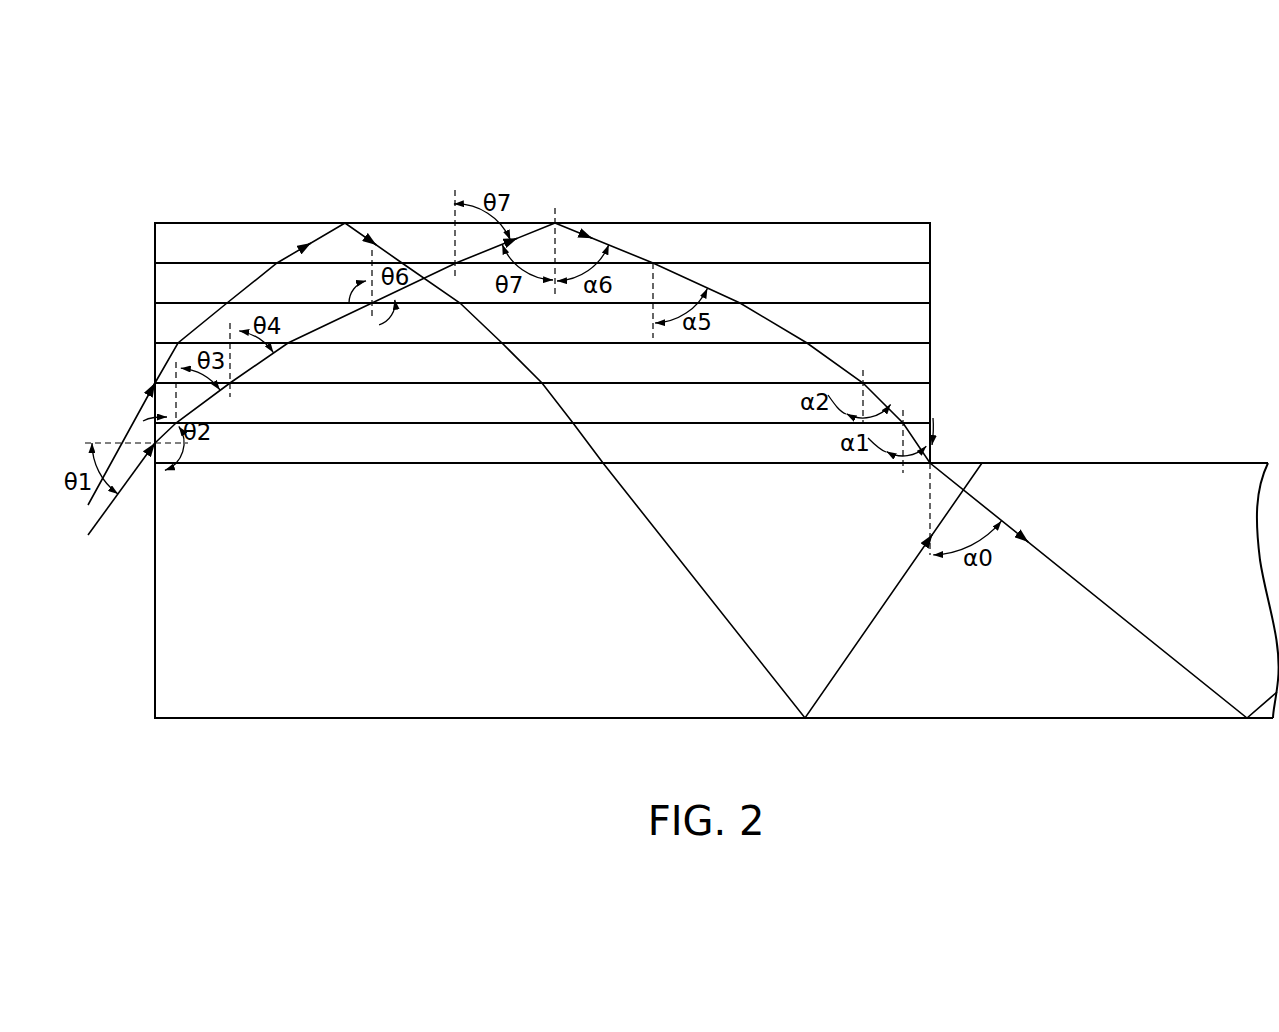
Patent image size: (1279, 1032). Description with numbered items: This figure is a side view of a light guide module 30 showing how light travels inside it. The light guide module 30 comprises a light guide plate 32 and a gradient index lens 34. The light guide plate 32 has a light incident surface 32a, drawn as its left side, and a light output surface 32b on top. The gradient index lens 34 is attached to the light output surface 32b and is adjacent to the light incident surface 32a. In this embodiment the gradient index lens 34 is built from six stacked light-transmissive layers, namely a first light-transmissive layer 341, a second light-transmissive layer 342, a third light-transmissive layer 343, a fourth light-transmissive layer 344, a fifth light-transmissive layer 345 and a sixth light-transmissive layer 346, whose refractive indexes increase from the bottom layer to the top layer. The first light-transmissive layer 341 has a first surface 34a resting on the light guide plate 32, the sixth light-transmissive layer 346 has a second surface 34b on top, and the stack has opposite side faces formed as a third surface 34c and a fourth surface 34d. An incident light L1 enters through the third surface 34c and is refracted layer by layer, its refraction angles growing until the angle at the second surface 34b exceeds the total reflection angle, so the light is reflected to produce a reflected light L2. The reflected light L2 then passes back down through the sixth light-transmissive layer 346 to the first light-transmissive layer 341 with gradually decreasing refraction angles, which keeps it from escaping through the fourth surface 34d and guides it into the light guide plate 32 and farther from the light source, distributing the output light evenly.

The light guide module 30 is at (150, 175).
The light guide plate 32 is at (669, 591).
The light incident surface 32a is at (152, 631).
The light output surface 32b is at (1049, 460).
The gradient index lens 34 is at (534, 334).
The first surface 34a is at (502, 465).
The second surface 34b is at (613, 221).
The third surface 34c is at (153, 288).
The fourth surface 34d is at (932, 230).
The first light-transmissive layer 341 is at (933, 450).
The second light-transmissive layer 342 is at (923, 403).
The third light-transmissive layer 343 is at (923, 363).
The fourth light-transmissive layer 344 is at (923, 323).
The fifth light-transmissive layer 345 is at (923, 283).
The sixth light-transmissive layer 346 is at (923, 243).
The incident light L1 is at (110, 511).
The reflected light L2 is at (633, 254).